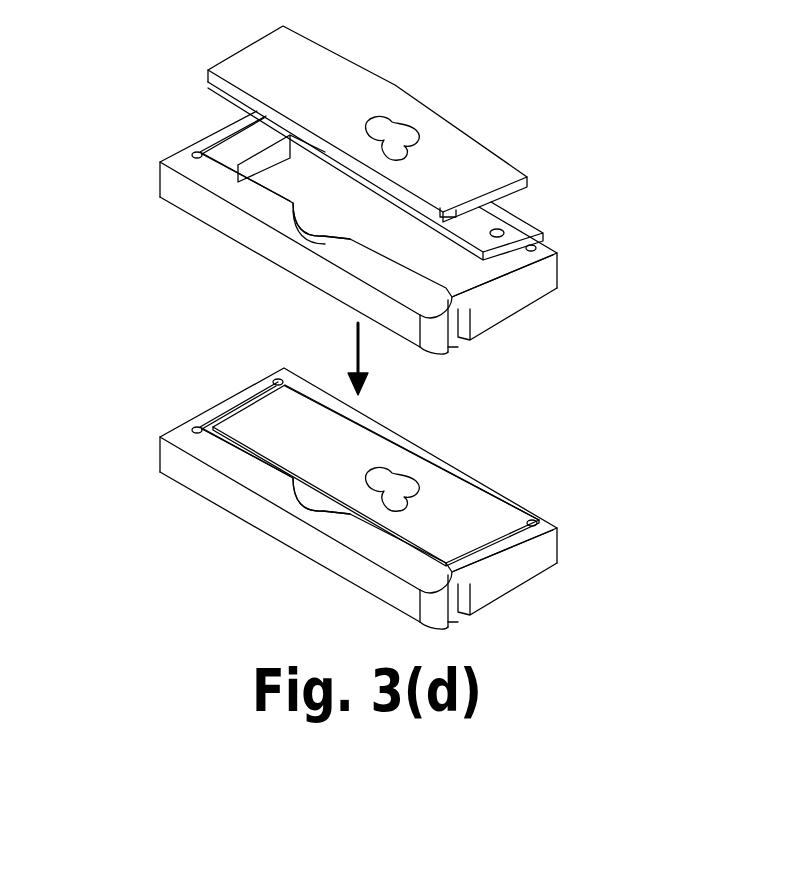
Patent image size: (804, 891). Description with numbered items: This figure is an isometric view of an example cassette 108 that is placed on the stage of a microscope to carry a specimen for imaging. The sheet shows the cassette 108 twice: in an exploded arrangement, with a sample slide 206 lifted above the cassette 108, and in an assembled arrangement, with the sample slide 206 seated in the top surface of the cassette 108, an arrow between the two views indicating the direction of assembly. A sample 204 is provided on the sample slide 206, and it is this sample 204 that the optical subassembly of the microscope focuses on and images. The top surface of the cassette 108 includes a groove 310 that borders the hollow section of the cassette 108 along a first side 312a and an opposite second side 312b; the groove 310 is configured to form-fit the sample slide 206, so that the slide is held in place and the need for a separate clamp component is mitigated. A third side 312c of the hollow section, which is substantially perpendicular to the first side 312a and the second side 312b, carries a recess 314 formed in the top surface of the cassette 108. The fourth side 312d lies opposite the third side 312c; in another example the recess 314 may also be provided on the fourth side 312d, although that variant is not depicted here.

The cassette 108 is at (543, 252).
The sample 204 is at (395, 128).
The sample slide 206 is at (490, 160).
The groove 310 is at (252, 138).
The first side 312a is at (277, 161).
The second side 312b is at (472, 260).
The third side 312c is at (263, 191).
The fourth side 312d is at (478, 226).
The recess 314 is at (317, 236).